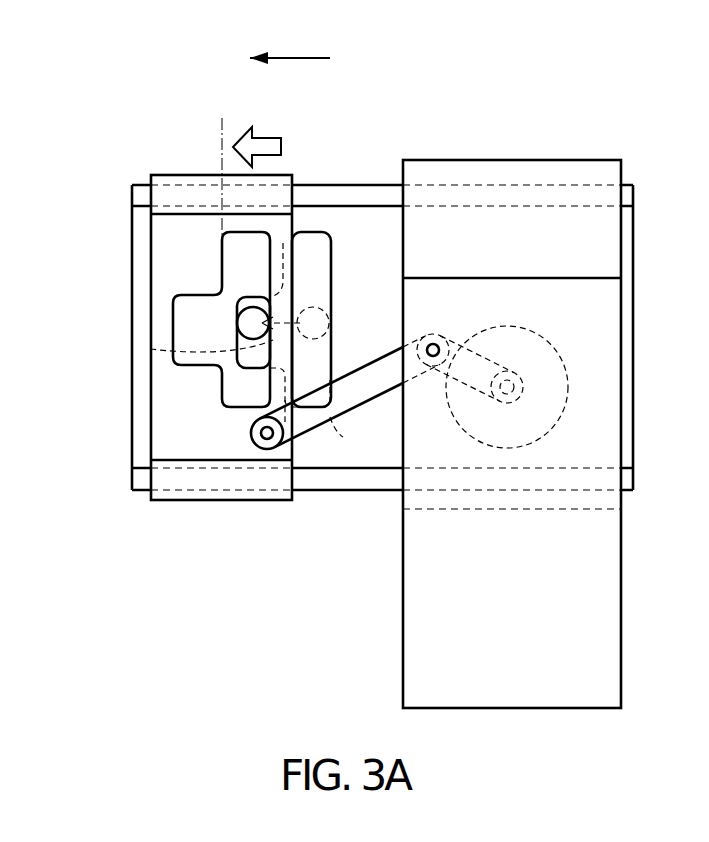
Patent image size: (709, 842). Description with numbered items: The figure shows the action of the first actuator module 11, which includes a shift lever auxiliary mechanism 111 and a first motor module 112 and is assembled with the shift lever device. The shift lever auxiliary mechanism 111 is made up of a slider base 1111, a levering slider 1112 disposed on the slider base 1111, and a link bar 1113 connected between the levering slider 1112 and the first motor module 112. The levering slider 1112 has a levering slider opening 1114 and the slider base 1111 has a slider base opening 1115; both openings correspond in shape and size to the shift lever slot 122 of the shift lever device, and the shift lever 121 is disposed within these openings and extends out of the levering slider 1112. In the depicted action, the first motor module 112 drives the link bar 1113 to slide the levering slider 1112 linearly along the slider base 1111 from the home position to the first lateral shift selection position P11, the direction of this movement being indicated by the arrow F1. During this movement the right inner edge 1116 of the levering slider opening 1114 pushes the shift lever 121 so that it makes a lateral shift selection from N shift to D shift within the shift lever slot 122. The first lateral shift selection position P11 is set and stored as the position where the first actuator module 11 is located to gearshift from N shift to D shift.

The first actuator module 11 is at (142, 133).
The shift lever auxiliary mechanism 111 is at (363, 567).
The slider base 1111 is at (140, 485).
The levering slider 1112 is at (242, 495).
The link bar 1113 is at (344, 410).
The levering slider opening 1114 is at (233, 388).
The slider base opening 1115 is at (325, 262).
The right inner edge 1116 is at (268, 275).
The shift lever 121 is at (260, 330).
The shift lever slot 122 is at (262, 264).
The first motor module 112 is at (613, 390).
The first lateral shift selection position P11 is at (240, 160).
The moving direction F1 is at (290, 42).